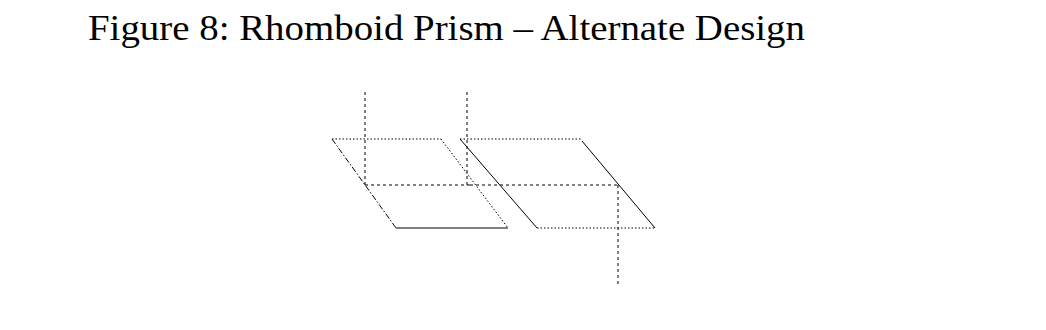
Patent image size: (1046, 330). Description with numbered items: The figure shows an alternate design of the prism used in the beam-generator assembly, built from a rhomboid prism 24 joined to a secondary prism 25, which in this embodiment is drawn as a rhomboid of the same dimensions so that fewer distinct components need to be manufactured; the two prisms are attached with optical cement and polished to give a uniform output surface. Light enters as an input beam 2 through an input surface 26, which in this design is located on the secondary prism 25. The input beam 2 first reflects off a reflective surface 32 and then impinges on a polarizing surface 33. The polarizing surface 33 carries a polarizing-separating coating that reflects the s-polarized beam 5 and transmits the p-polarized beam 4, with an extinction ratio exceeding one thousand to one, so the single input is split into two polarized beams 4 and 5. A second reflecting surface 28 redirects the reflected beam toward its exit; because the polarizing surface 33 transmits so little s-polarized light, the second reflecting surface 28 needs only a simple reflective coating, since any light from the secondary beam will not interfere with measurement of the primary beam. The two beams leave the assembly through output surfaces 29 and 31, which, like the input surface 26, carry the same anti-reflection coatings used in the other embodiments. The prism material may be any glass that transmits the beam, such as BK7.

The input beam 2 is at (623, 248).
The p-polarized beam 4 is at (363, 101).
The s-polarized beam 5 is at (466, 97).
The rhomboid prism 24 is at (408, 200).
The secondary prism 25 is at (558, 206).
The input surface 26 is at (638, 226).
The second reflecting surface 28 is at (350, 153).
The output surface 29 is at (348, 126).
The output surface 31 is at (481, 162).
The reflective surface 32 is at (584, 141).
The polarizing surface 33 is at (471, 185).